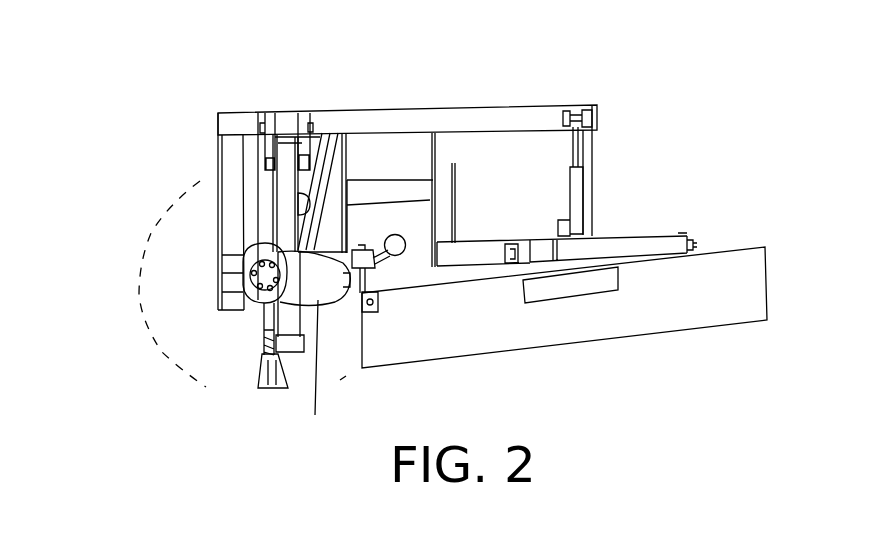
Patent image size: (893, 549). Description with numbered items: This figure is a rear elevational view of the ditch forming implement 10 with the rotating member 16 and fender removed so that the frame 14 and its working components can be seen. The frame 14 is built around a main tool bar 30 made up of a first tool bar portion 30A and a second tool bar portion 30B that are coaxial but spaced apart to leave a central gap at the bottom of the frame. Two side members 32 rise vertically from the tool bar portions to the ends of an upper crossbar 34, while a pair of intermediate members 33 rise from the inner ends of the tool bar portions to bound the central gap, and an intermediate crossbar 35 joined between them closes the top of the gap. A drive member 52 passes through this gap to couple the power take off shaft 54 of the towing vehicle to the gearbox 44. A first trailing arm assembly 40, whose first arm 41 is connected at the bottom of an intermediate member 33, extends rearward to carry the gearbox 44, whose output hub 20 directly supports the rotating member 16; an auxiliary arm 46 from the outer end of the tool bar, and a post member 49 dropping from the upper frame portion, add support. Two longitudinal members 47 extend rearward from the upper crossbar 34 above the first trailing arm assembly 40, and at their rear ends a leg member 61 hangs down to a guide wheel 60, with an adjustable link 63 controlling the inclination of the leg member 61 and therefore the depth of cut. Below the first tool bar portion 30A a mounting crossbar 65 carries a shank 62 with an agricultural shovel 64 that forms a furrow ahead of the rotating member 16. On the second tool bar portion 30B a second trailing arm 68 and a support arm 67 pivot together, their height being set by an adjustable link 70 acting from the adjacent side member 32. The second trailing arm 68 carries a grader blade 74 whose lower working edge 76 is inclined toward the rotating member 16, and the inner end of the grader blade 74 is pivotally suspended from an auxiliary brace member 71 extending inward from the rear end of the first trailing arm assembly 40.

The ditch forming implement 10 is at (725, 136).
The frame 14 is at (178, 142).
The rotating member 16 is at (150, 313).
The output hub 20 is at (250, 305).
The main tool bar 30 is at (697, 244).
The first tool bar portion 30A is at (220, 267).
The second tool bar portion 30B is at (485, 247).
The side members 32 is at (218, 157).
The intermediate members 33 is at (350, 178).
The upper crossbar 34 is at (510, 117).
The intermediate crossbar 35 is at (412, 187).
The first trailing arm assembly 40 is at (252, 97).
The first arm 41 is at (345, 275).
The gearbox 44 is at (320, 330).
The auxiliary arm 46 is at (245, 270).
The longitudinal members 47 is at (232, 128).
The post member 49 is at (263, 203).
The drive member 52 is at (385, 255).
The power take off shaft 54 is at (405, 255).
The guide wheel 60 is at (267, 363).
The leg member 61 is at (287, 222).
The shank 62 is at (262, 302).
The adjustable link 63 is at (317, 128).
The agricultural shovel 64 is at (270, 390).
The mounting crossbar 65 is at (232, 300).
The support arm 67 is at (618, 243).
The second trailing arm 68 is at (547, 240).
The adjustable link 70 is at (578, 185).
The auxiliary brace member 71 is at (392, 262).
The grader blade 74 is at (693, 297).
The lower working edge 76 is at (600, 343).